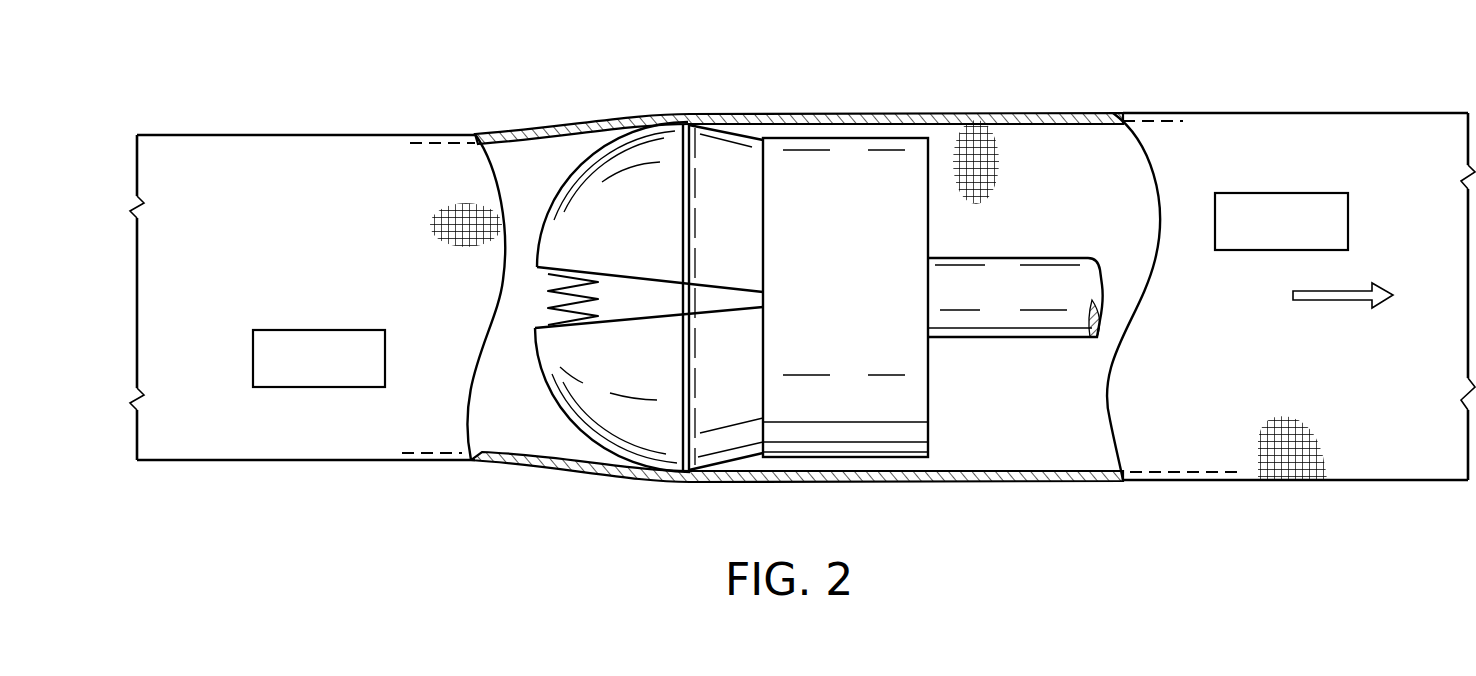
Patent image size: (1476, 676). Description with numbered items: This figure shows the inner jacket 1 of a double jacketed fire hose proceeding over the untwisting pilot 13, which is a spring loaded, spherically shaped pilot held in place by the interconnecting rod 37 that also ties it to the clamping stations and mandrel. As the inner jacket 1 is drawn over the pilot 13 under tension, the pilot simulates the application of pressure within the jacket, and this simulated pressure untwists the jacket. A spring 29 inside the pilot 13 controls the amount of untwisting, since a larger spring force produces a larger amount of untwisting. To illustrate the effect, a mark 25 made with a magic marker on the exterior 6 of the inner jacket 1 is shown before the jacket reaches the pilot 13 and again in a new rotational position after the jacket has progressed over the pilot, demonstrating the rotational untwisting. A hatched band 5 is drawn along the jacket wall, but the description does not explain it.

The inner jacket 1 is at (296, 134).
The liner sleeve 5 is at (1048, 124).
The exterior 6 is at (1193, 112).
The untwisting pilot 13 is at (665, 458).
The mark 25 is at (305, 388).
The spring 29 is at (588, 277).
The interconnecting rod 37 is at (1008, 317).